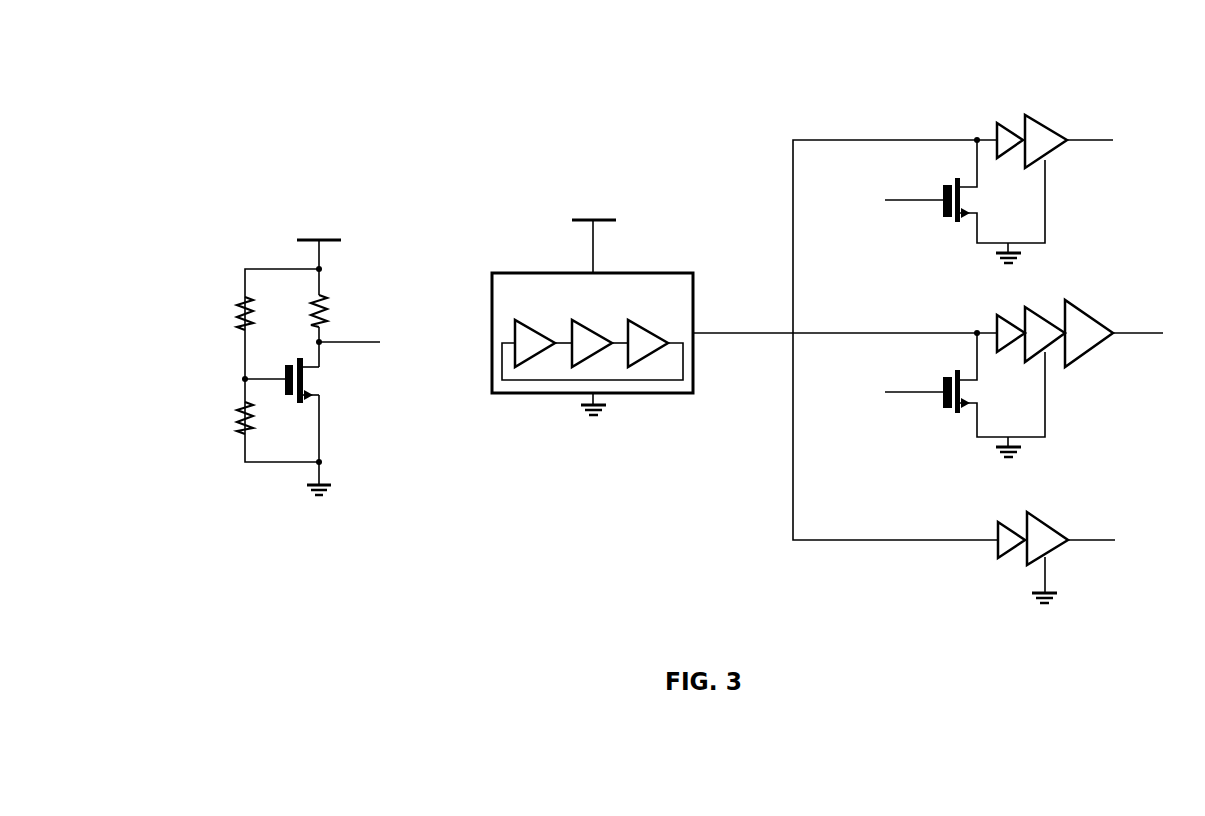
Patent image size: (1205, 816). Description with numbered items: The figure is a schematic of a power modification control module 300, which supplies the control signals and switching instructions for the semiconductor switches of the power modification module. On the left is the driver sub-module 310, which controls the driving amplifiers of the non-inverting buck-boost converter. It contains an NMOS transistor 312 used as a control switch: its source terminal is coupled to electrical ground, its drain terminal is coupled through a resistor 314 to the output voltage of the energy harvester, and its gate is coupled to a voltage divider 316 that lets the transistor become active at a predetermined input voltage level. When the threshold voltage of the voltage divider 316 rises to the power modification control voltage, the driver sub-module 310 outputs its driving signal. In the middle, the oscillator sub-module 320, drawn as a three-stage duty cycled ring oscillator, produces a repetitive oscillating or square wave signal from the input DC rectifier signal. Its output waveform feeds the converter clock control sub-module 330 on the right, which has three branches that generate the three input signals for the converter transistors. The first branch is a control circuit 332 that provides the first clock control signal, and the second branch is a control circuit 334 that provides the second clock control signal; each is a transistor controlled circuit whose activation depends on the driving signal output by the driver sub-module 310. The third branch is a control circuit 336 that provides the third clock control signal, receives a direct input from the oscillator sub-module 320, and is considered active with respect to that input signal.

The power modification control module 300 is at (408, 114).
The driver sub-module 310 is at (254, 240).
The transistor 312 is at (300, 407).
The resistor 314 is at (327, 303).
The voltage divider 316 is at (242, 358).
The oscillator sub-module 320 is at (501, 219).
The converter clock control sub-module 330 is at (851, 109).
The control circuit 332 is at (1048, 188).
The control circuit 334 is at (1048, 395).
The control circuit 336 is at (1053, 555).